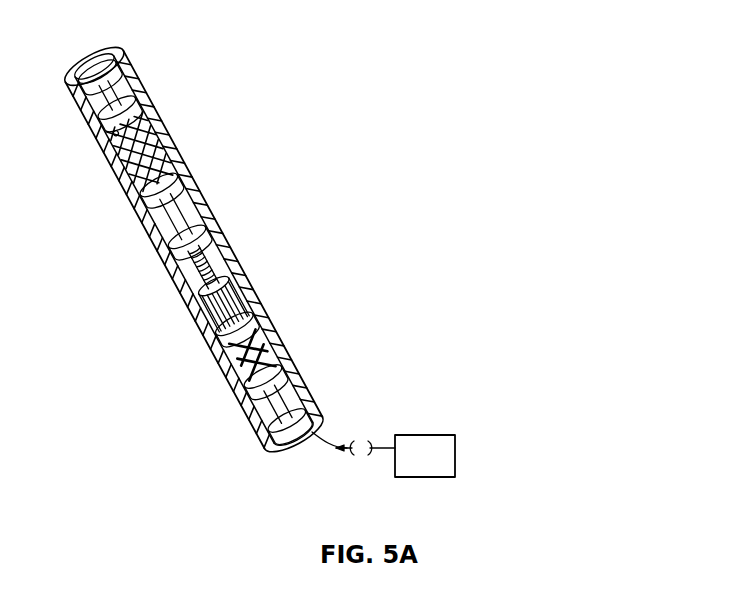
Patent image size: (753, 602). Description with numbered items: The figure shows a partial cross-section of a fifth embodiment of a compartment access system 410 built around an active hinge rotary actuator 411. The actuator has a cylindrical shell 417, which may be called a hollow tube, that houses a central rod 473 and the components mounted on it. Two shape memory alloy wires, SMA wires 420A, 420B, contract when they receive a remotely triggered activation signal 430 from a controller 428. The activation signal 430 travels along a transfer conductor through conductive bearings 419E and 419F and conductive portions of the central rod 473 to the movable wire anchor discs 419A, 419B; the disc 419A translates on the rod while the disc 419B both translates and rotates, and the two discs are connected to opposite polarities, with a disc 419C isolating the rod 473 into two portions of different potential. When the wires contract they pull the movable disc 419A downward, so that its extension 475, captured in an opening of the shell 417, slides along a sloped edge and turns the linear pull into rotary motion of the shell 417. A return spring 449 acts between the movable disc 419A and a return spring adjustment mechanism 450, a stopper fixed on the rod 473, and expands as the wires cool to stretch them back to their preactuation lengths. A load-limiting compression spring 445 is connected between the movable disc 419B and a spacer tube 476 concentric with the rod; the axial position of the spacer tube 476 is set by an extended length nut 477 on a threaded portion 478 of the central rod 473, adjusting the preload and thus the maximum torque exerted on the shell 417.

The compartment access system 410 is at (360, 82).
The rotary actuator 411 is at (103, 181).
The cylindrical shell 417 is at (138, 214).
The compression spring 445 is at (225, 352).
The conductive bearing 419F is at (99, 65).
The movable wire anchor disc 419A is at (129, 95).
The extension 475 is at (114, 134).
The return spring 449 is at (168, 133).
The return spring adjustment mechanism 450 is at (177, 178).
The disc 419C is at (210, 245).
The threaded portion 478 is at (222, 265).
The extended length nut 477 is at (240, 292).
The spacer tube 476 is at (225, 338).
The SMA wire 420B is at (255, 340).
The central rod 473 is at (260, 353).
The SMA wire 420A is at (235, 372).
The movable wire anchor disc 419B is at (258, 395).
The conductive bearing 419E is at (308, 432).
The activation signal 430 is at (347, 447).
The controller 428 is at (447, 471).